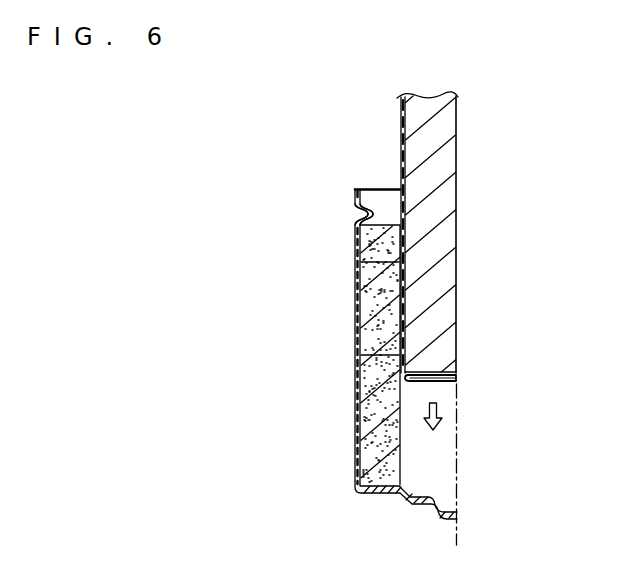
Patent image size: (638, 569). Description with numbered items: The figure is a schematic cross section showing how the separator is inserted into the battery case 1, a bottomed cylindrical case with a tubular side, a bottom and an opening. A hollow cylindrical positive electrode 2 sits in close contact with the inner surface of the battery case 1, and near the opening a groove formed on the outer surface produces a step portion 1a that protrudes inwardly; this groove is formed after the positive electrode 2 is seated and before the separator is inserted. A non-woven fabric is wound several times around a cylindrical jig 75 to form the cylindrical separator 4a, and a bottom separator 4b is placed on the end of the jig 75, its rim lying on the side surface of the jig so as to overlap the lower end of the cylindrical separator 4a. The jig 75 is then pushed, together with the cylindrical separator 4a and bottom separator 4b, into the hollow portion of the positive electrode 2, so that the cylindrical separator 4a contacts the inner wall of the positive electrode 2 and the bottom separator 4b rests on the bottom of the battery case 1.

The jig 75 is at (442, 162).
The battery case 1 is at (358, 329).
The step portion 1a is at (358, 216).
The positive electrode 2 is at (360, 390).
The cylindrical separator 4a is at (367, 268).
The bottom separator 4b is at (440, 380).